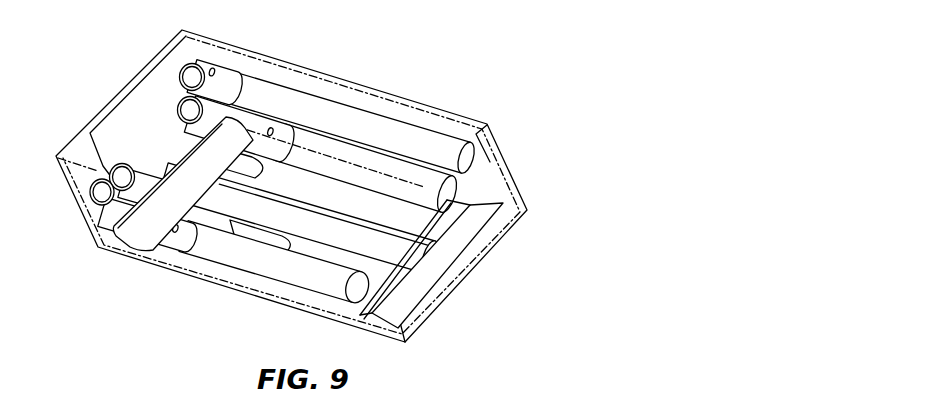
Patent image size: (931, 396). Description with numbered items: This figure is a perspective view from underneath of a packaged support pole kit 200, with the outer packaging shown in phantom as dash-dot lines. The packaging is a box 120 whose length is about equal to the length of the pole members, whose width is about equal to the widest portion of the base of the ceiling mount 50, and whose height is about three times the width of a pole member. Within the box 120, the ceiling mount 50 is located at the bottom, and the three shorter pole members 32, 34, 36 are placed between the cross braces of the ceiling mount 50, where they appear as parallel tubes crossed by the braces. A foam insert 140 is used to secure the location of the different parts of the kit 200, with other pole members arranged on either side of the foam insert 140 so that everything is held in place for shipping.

The kit 200 is at (301, 171).
The foam insert 140 is at (138, 113).
The box 120 is at (503, 160).
The pole member 36 is at (420, 188).
The pole member 32 is at (262, 262).
The pole member 34 is at (442, 222).
The ceiling mount 50 is at (467, 232).